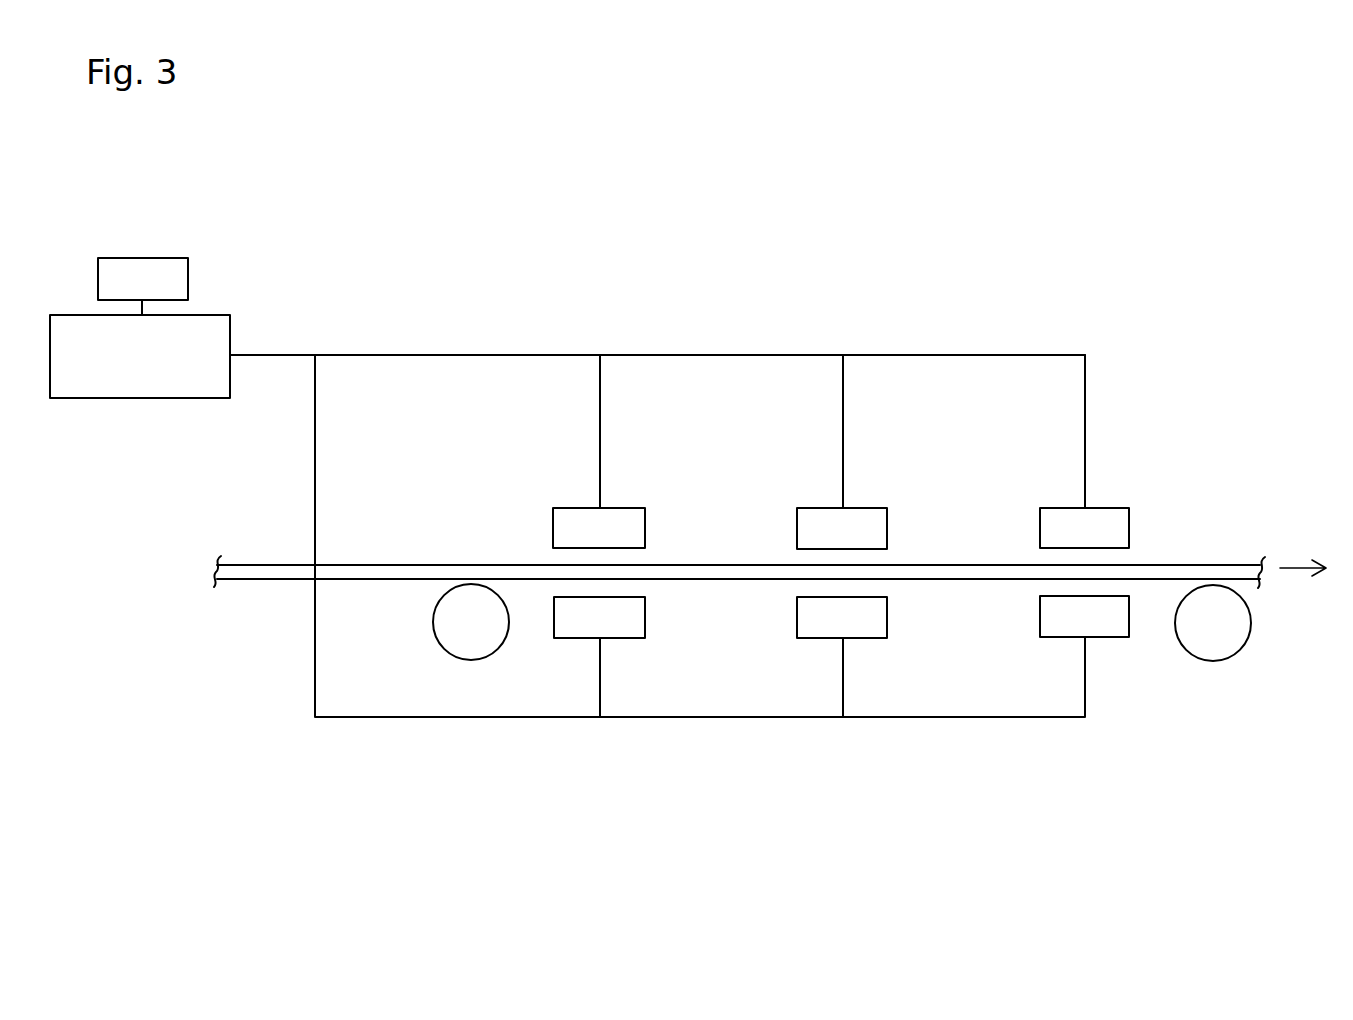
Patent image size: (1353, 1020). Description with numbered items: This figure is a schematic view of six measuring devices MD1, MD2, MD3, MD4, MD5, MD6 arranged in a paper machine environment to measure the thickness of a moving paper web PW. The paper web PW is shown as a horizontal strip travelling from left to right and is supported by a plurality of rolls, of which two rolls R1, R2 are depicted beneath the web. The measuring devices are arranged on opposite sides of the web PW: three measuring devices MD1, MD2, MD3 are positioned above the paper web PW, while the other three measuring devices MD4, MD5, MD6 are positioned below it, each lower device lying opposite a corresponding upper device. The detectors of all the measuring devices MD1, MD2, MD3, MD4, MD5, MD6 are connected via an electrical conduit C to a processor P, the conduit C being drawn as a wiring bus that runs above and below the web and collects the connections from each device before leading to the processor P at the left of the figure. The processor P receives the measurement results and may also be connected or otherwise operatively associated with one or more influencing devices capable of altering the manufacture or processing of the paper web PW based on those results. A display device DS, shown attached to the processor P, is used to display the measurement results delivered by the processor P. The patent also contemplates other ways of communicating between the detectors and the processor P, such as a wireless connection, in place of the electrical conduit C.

The processor P is at (131, 418).
The display device DS is at (225, 279).
The electrical conduit C is at (464, 332).
The paper web PW is at (253, 610).
The roll R1 is at (418, 658).
The roll R2 is at (1245, 678).
The measuring device MD1 is at (668, 486).
The measuring device MD2 is at (906, 488).
The measuring device MD3 is at (1149, 494).
The measuring device MD4 is at (664, 648).
The measuring device MD5 is at (899, 649).
The measuring device MD6 is at (1143, 661).